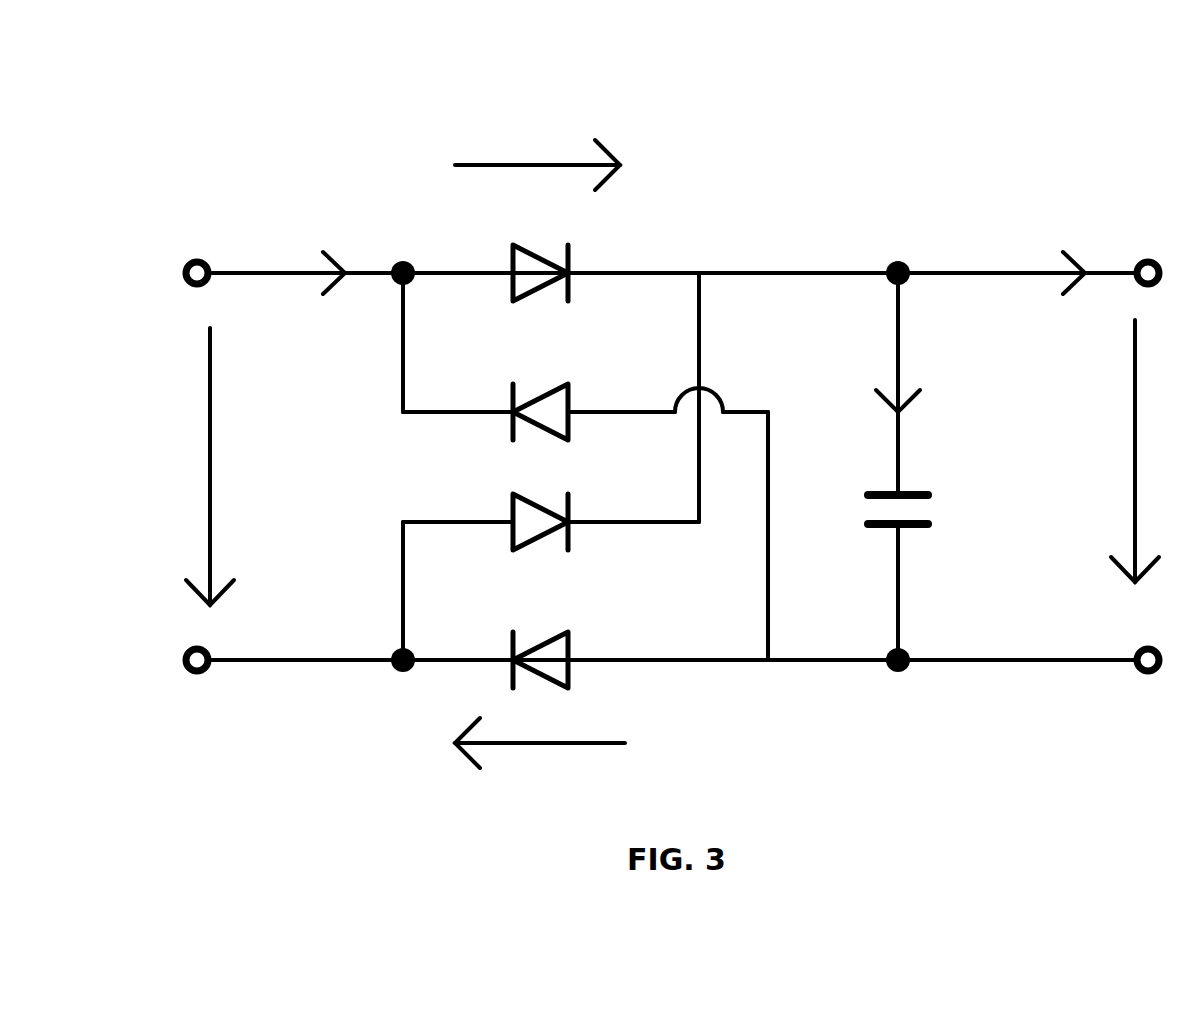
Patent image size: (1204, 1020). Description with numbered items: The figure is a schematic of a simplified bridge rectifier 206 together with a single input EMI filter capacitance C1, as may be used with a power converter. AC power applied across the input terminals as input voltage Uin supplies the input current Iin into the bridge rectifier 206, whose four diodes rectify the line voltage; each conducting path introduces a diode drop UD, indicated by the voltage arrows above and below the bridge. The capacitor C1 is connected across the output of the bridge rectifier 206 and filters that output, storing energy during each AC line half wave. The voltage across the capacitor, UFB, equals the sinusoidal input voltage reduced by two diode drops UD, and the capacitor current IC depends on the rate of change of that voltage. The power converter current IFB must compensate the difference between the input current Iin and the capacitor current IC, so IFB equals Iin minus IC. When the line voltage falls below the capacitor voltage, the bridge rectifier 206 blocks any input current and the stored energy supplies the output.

The bridge rectifier 206 is at (548, 122).
The input EMI filter capacitor C1 is at (927, 466).
The input current Iin is at (317, 296).
The power converter current IFB is at (1053, 296).
The capacitor current IC is at (891, 381).
The diode drop UD is at (540, 477).
The input voltage Uin is at (201, 466).
The capacitor voltage UFB is at (1128, 451).